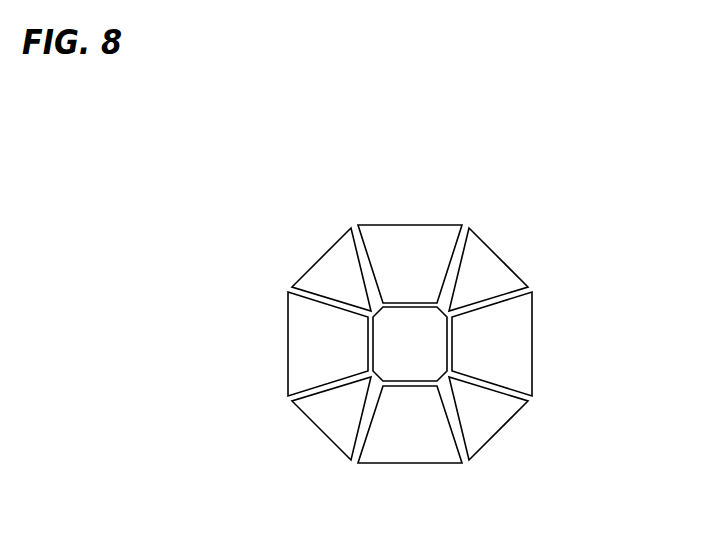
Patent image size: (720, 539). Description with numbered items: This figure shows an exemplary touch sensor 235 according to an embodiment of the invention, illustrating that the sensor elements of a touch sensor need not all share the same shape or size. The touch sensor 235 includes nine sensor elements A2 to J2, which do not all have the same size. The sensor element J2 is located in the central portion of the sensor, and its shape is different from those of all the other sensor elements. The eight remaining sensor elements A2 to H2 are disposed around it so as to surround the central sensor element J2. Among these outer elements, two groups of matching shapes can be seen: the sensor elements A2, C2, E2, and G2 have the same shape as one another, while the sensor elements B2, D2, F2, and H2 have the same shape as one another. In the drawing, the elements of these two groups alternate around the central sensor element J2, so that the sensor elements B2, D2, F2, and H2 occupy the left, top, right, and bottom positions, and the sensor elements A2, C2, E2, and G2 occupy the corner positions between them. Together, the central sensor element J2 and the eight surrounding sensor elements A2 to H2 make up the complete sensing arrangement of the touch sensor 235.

The touch sensor 235 is at (657, 210).
The sensor element A2 is at (320, 420).
The sensor element B2 is at (300, 344).
The sensor element C2 is at (319, 267).
The sensor element D2 is at (410, 243).
The sensor element E2 is at (496, 267).
The sensor element F2 is at (522, 344).
The sensor element G2 is at (498, 420).
The sensor element H2 is at (410, 449).
The sensor element J2 is at (410, 344).